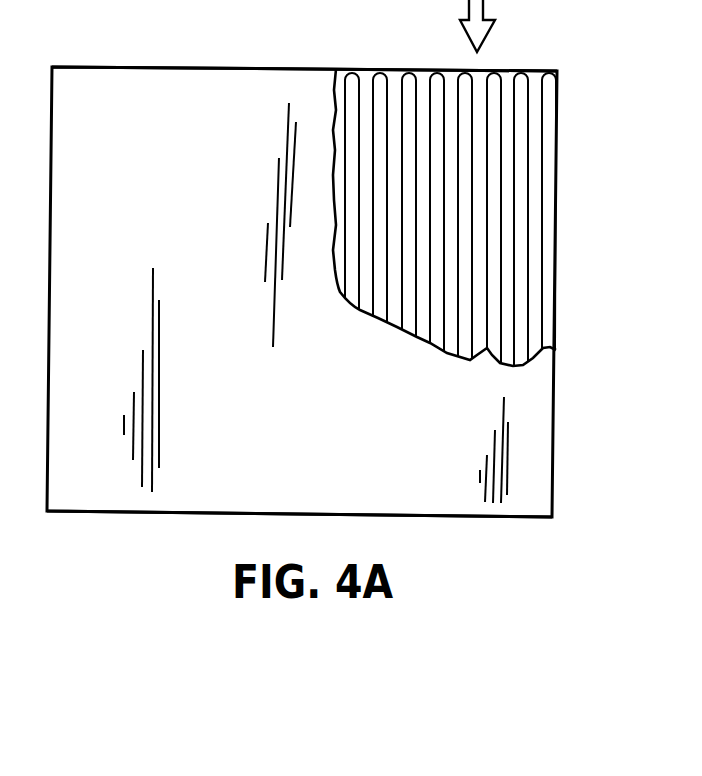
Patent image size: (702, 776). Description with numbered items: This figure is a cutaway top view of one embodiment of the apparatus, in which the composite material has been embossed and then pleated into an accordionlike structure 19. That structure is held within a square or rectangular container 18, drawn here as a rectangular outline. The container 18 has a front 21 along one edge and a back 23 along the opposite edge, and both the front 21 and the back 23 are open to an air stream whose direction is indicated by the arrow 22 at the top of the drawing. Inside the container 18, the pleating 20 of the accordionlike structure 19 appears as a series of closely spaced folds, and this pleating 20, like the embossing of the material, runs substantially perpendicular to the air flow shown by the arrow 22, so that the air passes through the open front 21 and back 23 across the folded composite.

The container 18 is at (208, 483).
The accordionlike structure 19 is at (528, 212).
The pleating 20 is at (353, 78).
The front 21 is at (108, 64).
The arrow 22 is at (486, 11).
The back 23 is at (100, 513).